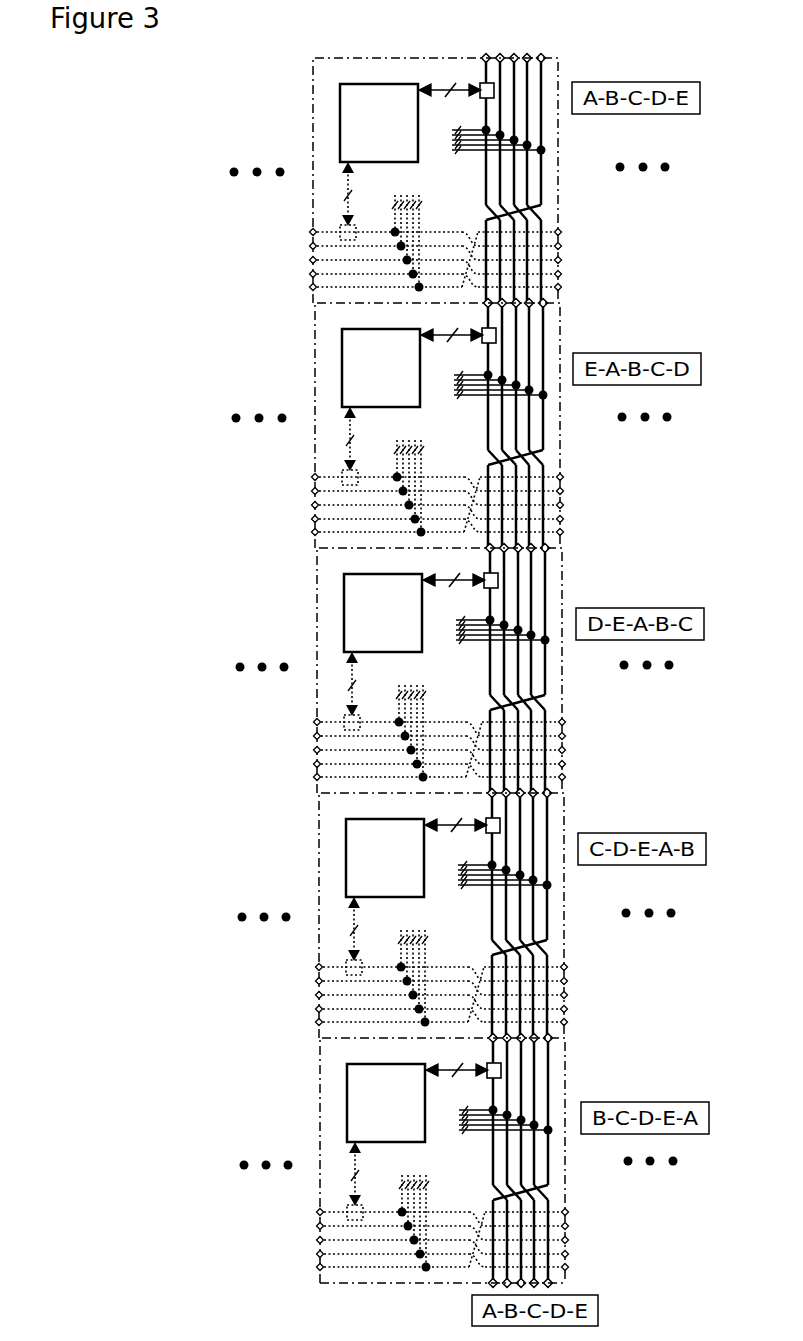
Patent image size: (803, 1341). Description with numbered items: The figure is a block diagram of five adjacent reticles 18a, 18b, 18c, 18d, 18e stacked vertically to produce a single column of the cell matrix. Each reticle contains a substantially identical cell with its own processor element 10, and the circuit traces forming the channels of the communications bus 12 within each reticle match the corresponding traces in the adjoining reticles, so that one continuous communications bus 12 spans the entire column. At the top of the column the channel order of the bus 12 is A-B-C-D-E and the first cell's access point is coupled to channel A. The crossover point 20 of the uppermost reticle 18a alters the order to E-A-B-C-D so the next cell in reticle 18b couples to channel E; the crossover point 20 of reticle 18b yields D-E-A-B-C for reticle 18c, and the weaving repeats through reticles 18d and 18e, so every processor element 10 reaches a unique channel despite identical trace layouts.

The communications bus 12 is at (546, 51).
The processor element 10 is at (414, 612).
The reticle 18a is at (410, 180).
The reticle 18b is at (412, 425).
The reticle 18c is at (414, 670).
The reticle 18d is at (416, 915).
The reticle 18e is at (417, 1160).
The crossover point 20 is at (553, 691).